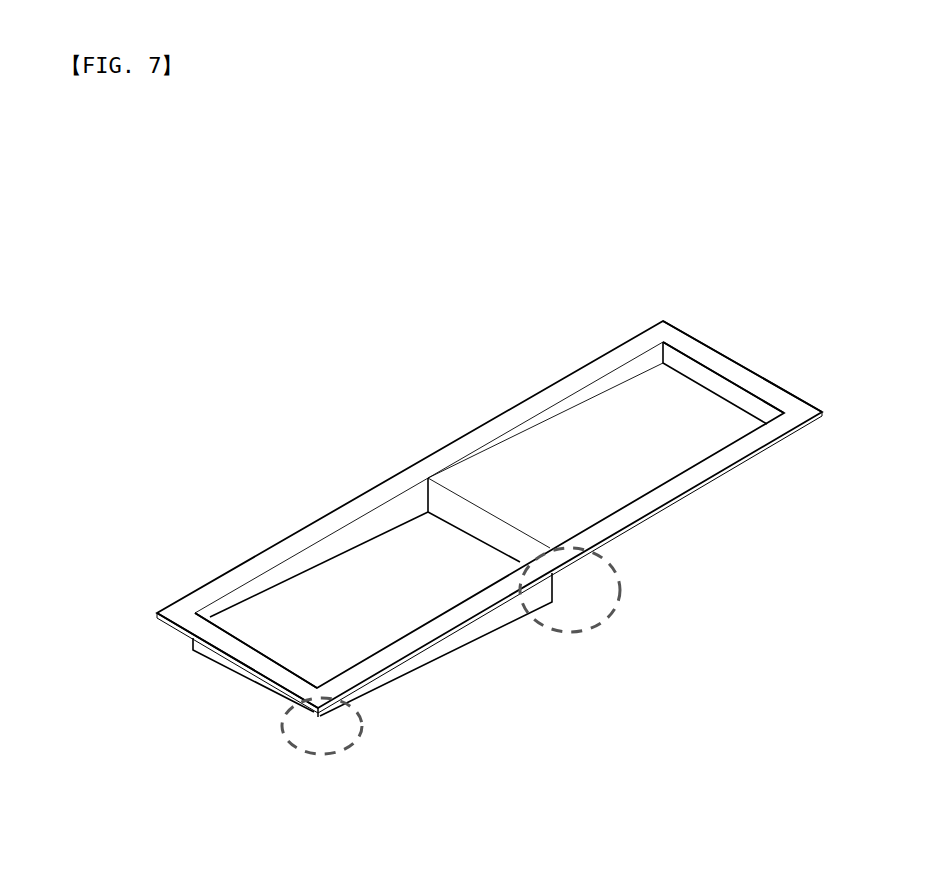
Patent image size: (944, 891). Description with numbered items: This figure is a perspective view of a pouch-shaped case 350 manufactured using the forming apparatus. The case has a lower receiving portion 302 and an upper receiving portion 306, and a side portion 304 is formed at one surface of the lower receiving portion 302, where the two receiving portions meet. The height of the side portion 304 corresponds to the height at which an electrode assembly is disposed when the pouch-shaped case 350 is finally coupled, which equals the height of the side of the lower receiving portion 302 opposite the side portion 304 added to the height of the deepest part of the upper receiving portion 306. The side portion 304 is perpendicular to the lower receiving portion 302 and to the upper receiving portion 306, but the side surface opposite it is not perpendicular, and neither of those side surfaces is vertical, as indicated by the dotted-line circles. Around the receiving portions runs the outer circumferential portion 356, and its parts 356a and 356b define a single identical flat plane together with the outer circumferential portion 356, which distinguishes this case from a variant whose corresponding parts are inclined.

The pouch-shaped case 350 is at (136, 269).
The lower receiving portion 302 is at (283, 624).
The side portion 304 is at (462, 511).
The upper receiving portion 306 is at (570, 420).
The outer circumferential portion 356 is at (372, 658).
The part of the outer circumferential portion 356a is at (250, 652).
The part of the outer circumferential portion 356b is at (748, 382).